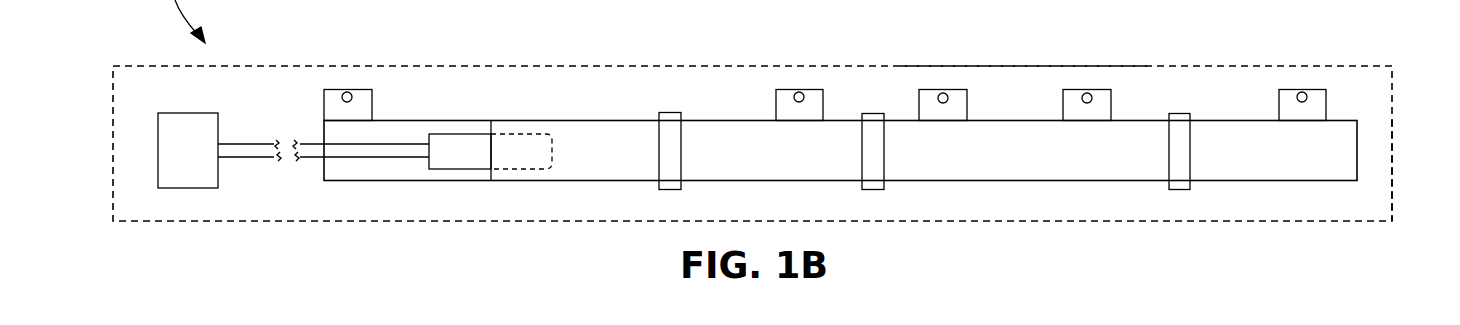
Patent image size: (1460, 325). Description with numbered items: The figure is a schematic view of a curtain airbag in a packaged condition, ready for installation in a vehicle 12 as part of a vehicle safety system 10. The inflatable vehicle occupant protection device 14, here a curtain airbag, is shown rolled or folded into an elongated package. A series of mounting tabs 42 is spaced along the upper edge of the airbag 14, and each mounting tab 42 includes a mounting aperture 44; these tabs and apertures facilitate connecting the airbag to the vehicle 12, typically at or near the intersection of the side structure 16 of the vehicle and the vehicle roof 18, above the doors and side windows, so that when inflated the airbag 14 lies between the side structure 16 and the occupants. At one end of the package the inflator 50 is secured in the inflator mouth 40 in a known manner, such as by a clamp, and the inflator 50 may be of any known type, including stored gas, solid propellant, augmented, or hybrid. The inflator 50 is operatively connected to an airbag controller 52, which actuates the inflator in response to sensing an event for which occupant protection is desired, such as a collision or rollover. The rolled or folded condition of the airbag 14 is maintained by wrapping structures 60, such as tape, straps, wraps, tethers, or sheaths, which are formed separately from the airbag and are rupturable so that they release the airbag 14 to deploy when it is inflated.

The vehicle safety system 10 is at (147, 40).
The vehicle 12 is at (263, 100).
The inflatable vehicle occupant protection device 14 is at (725, 143).
The side structure 16 is at (1377, 174).
The vehicle roof 18 is at (1035, 65).
The inflator mouth 40 is at (537, 147).
The mounting tabs 42 is at (358, 96).
The mounting apertures 44 is at (347, 92).
The inflator 50 is at (465, 147).
The airbag controller 52 is at (196, 165).
The wrapping structures 60 is at (665, 137).